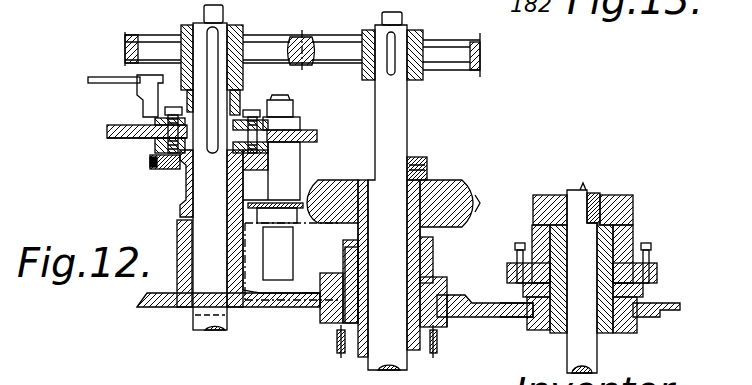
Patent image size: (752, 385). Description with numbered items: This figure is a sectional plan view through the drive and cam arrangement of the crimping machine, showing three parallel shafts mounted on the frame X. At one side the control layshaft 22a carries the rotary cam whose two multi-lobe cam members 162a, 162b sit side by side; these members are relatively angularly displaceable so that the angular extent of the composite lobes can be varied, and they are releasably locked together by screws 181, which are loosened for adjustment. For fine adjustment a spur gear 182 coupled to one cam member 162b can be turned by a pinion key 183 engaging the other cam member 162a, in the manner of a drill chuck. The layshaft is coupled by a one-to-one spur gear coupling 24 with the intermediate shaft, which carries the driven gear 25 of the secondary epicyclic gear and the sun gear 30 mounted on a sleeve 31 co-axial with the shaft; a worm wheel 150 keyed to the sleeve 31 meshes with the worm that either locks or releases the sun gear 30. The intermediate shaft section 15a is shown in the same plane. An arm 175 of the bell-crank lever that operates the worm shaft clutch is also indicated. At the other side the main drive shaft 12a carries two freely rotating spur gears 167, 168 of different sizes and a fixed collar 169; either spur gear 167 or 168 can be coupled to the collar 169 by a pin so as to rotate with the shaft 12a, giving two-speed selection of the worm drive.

The main drive shaft 12a is at (577, 352).
The shaft 15a is at (392, 207).
The control layshaft 22a is at (203, 180).
The spur gear coupling 24 is at (488, 58).
The driven gear 25 is at (288, 43).
The sun gear 30 is at (335, 340).
The sleeve 31 is at (415, 250).
The worm wheel 150 is at (477, 203).
The cam member 162a is at (115, 124).
The cam member 162b is at (117, 138).
The spur gear 167 is at (516, 250).
The spur gear 168 is at (653, 263).
The collar 169 is at (618, 198).
The arm 175 is at (282, 197).
The screws 181 is at (173, 110).
The spur gear 182 is at (157, 125).
The pinion key 183 is at (145, 88).
The frame X is at (500, 303).